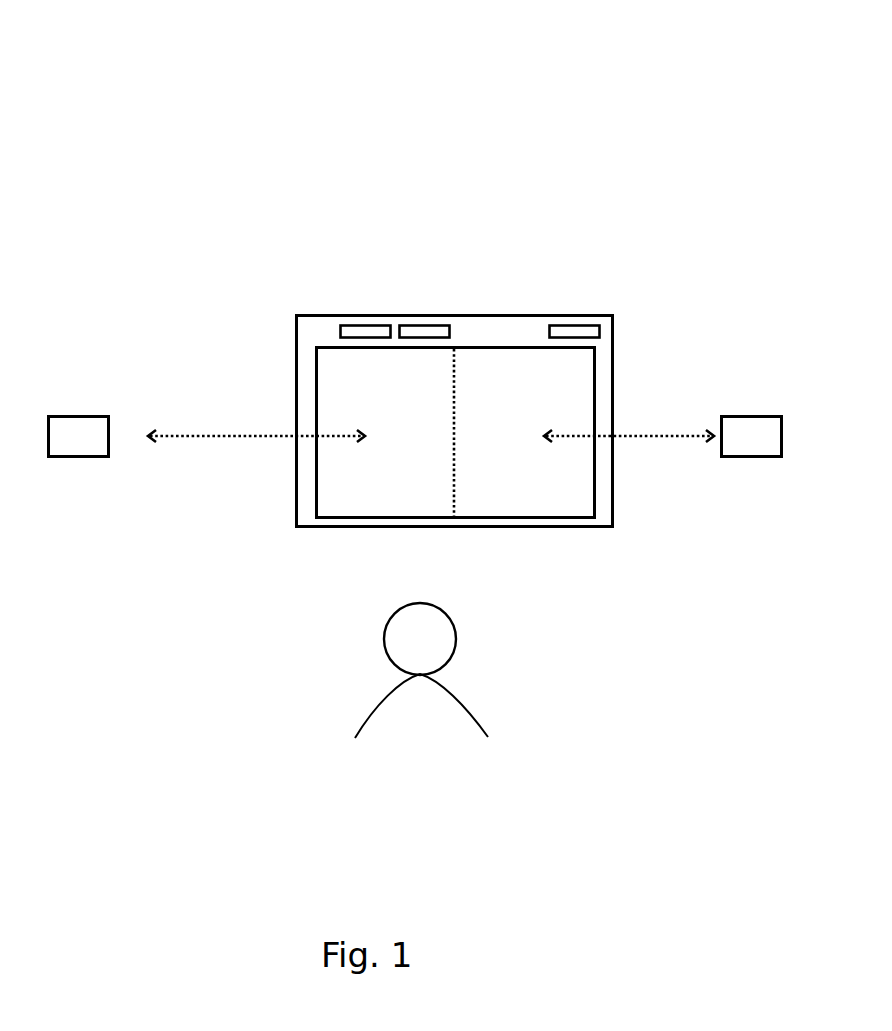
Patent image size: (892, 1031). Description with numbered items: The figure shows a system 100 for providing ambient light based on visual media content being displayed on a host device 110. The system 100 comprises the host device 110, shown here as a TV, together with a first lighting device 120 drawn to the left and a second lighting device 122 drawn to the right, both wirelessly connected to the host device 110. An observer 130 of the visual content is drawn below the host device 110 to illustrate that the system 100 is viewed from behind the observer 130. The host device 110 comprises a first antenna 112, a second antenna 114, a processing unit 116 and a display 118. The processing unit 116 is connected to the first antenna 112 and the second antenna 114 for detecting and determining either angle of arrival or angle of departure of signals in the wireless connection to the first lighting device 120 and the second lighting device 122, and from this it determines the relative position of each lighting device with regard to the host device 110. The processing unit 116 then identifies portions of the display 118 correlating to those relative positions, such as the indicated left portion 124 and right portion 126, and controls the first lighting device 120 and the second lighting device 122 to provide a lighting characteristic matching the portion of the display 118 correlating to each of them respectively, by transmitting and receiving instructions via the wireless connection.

The system 100 is at (553, 158).
The host device 110 is at (385, 313).
The first antenna 112 is at (340, 327).
The second antenna 114 is at (427, 327).
The processing unit 116 is at (573, 322).
The display 118 is at (315, 385).
The first lighting device 120 is at (79, 457).
The second lighting device 122 is at (751, 457).
The left portion 124 is at (353, 486).
The right portion 126 is at (544, 486).
The observer 130 is at (365, 687).